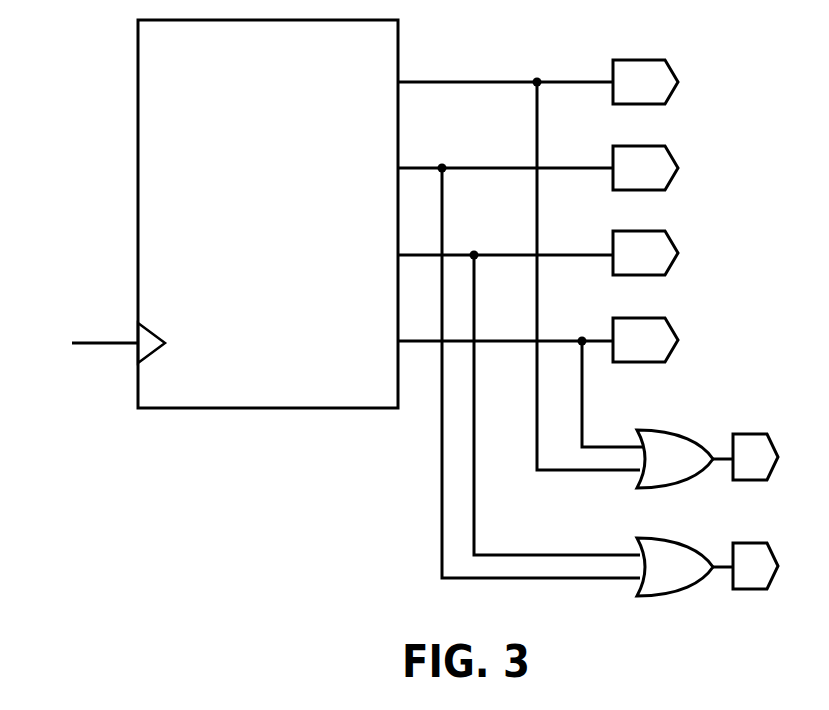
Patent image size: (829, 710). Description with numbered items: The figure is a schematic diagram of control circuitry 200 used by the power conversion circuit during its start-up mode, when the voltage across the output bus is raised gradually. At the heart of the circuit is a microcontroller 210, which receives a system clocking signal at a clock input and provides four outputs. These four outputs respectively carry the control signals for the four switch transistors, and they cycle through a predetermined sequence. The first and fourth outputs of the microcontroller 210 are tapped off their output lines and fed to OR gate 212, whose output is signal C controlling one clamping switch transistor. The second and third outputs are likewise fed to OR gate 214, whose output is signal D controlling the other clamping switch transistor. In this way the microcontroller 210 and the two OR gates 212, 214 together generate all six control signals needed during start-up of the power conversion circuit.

The control circuitry 200 is at (254, 519).
The microcontroller 210 is at (216, 214).
The OR gate 212 is at (675, 459).
The OR gate 214 is at (675, 567).